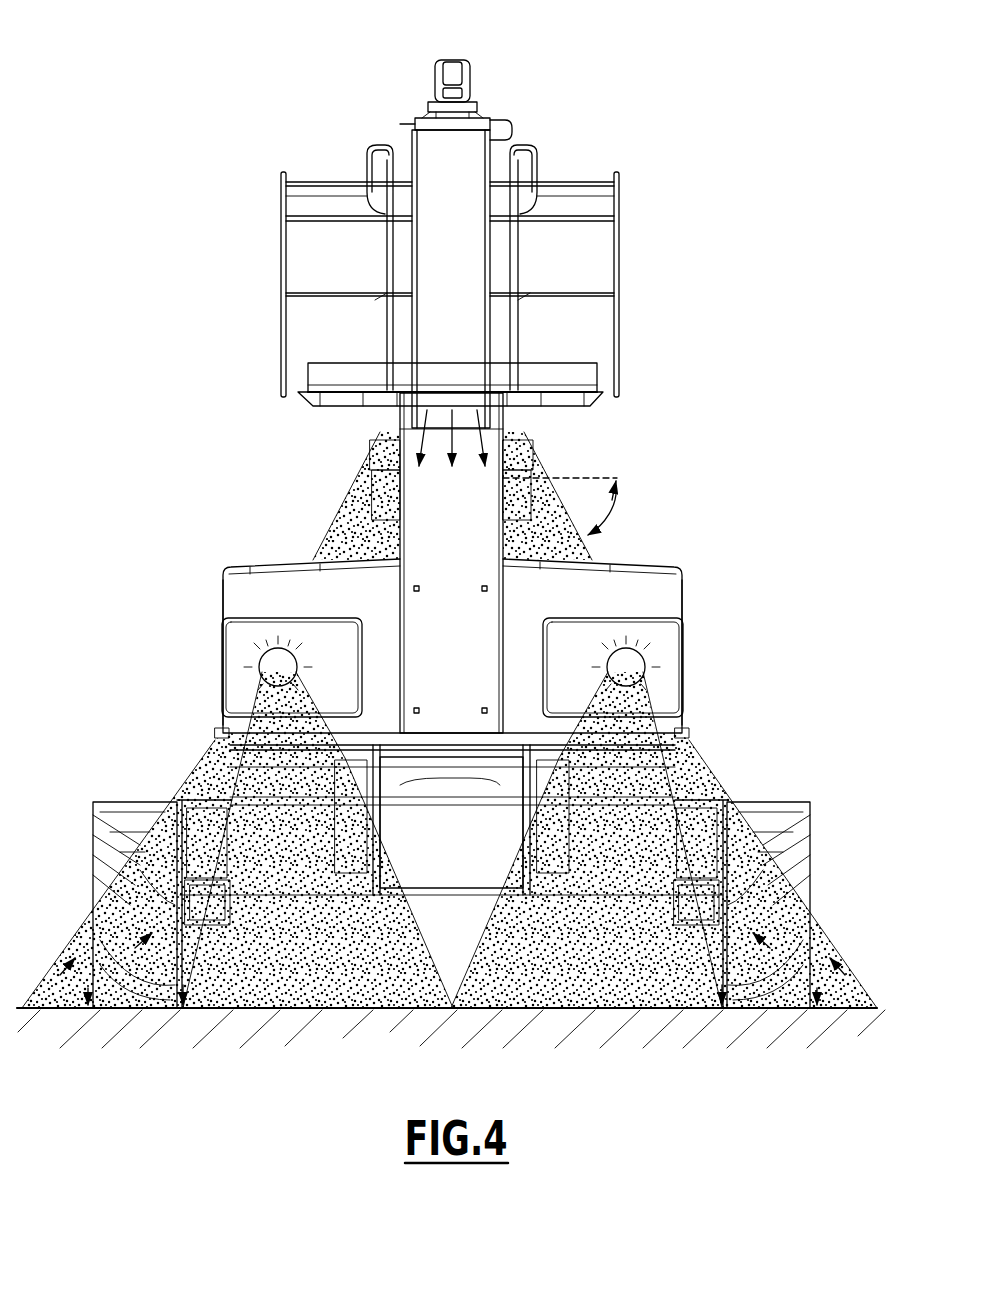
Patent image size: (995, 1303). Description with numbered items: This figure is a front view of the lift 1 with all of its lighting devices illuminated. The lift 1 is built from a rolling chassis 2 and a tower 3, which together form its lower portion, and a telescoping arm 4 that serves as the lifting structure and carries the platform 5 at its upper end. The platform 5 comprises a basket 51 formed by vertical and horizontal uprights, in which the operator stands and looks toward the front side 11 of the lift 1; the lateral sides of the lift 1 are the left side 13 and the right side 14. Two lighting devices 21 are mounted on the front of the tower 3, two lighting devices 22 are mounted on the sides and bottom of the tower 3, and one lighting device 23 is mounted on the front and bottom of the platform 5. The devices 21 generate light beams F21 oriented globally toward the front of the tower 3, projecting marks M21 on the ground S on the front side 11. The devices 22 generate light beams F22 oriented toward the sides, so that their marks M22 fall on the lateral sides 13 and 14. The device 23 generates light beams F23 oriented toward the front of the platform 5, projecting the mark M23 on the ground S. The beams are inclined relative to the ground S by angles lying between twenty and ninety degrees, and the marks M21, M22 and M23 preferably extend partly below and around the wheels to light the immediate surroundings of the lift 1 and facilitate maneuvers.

The lift 1 is at (192, 104).
The platform 5 is at (642, 148).
The basket 51 is at (332, 377).
The telescoping arm 4 is at (425, 528).
The tower 3 is at (668, 568).
The rolling chassis 2 is at (451, 876).
The left side 13 is at (796, 580).
The right side 14 is at (68, 672).
The lighting devices 21 is at (272, 663).
The lighting devices 22 is at (220, 733).
The lighting device 23 is at (385, 415).
The light beams F21 is at (278, 692).
The light beams F22 is at (222, 735).
The light beams F23 is at (372, 452).
The marks M21 is at (265, 1005).
The marks M22 is at (68, 1012).
The mark M23 is at (452, 1004).
The ground S is at (23, 1005).
The front side 11 is at (524, 1066).